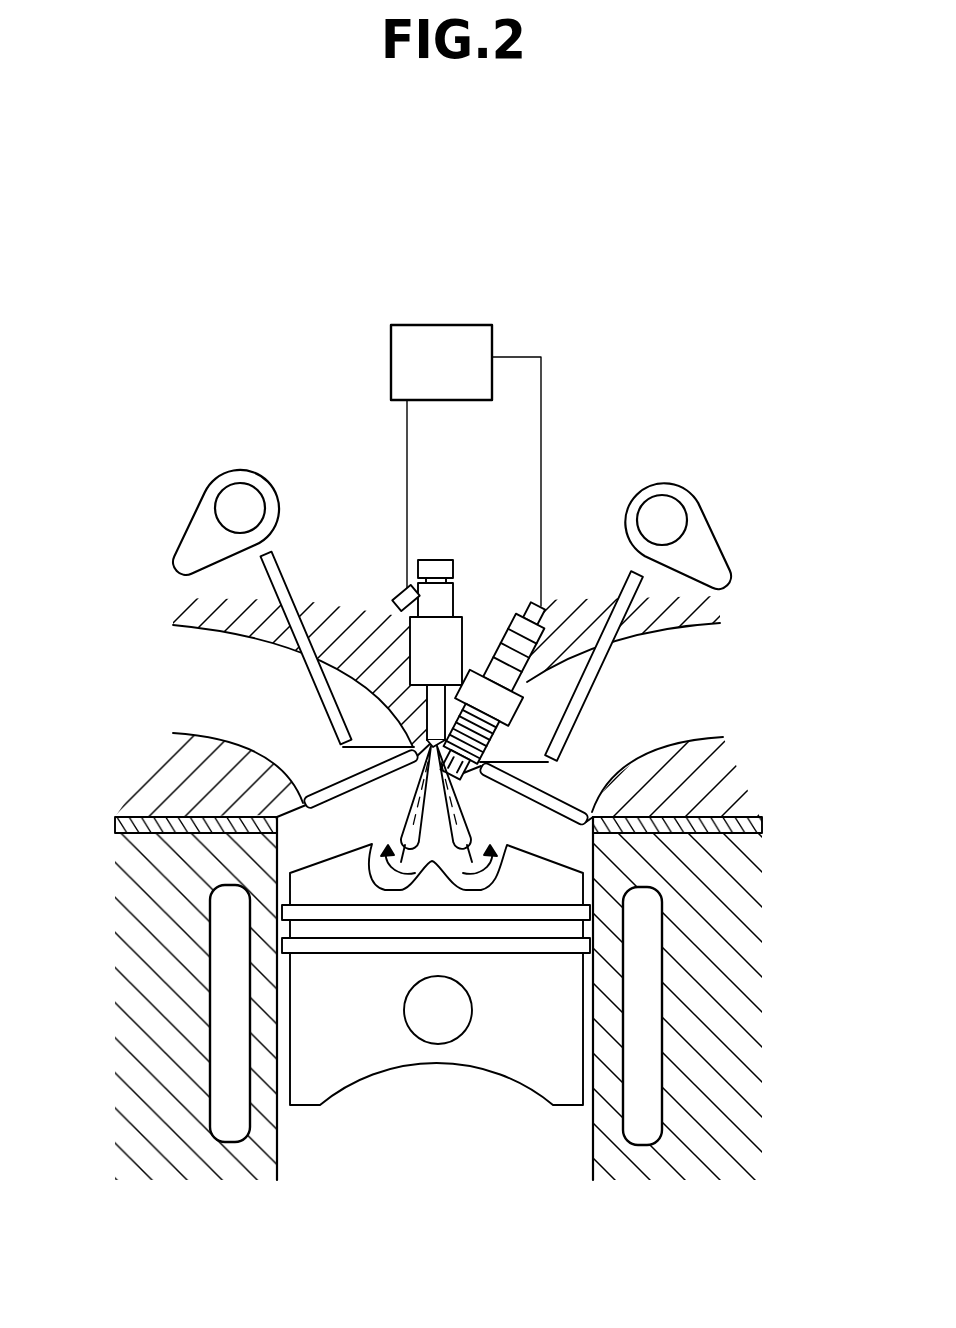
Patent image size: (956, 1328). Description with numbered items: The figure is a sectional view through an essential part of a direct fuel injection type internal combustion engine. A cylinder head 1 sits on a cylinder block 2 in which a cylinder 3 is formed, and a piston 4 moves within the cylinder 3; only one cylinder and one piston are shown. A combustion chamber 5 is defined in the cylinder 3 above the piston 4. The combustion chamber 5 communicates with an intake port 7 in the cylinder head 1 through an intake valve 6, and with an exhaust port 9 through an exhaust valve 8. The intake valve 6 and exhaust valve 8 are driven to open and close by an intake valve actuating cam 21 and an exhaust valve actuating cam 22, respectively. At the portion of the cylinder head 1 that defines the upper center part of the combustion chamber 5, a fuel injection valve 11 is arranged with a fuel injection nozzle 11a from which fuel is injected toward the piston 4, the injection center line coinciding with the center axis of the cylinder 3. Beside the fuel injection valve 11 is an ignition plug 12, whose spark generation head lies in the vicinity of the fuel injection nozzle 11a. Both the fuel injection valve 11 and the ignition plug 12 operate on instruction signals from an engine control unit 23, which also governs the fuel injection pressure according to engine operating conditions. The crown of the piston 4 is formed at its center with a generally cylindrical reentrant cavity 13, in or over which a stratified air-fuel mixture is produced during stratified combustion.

The cylinder head 1 is at (705, 778).
The cylinder block 2 is at (690, 1067).
The cylinder 3 is at (592, 1110).
The piston 4 is at (543, 998).
The combustion chamber 5 is at (312, 847).
The intake valve 6 is at (305, 681).
The intake port 7 is at (188, 712).
The exhaust valve 8 is at (588, 690).
The exhaust port 9 is at (710, 703).
The fuel injection valve 11 is at (423, 645).
The fuel injection nozzle 11a is at (352, 742).
The ignition plug 12 is at (521, 622).
The cavity 13 is at (420, 860).
The intake valve actuating cam 21 is at (197, 540).
The exhaust valve actuating cam 22 is at (715, 532).
The engine control unit 23 is at (452, 325).